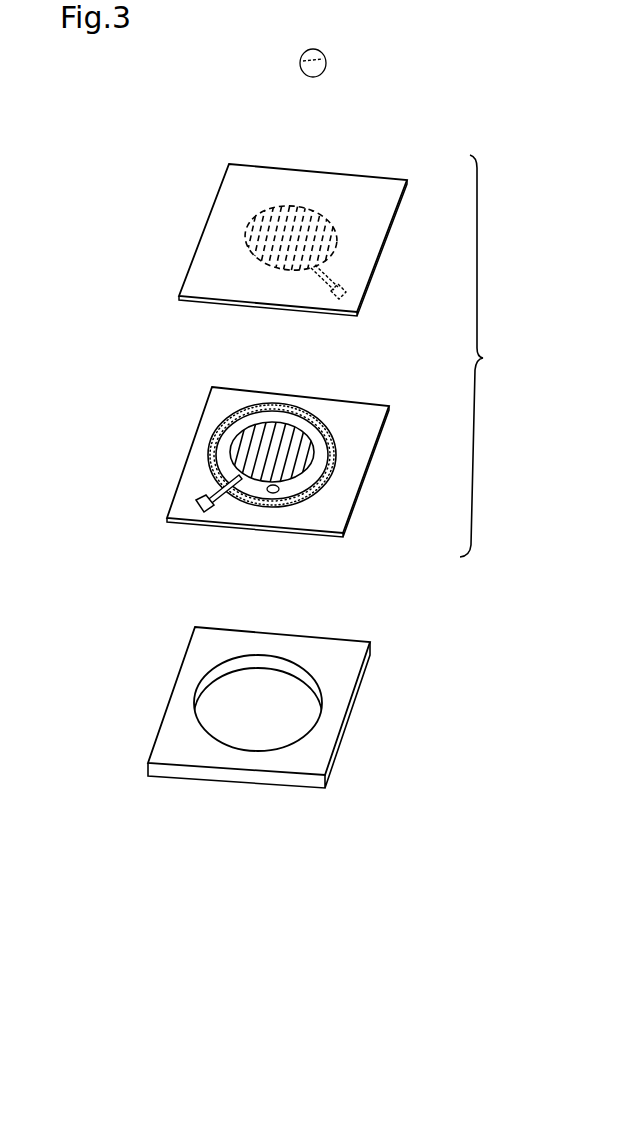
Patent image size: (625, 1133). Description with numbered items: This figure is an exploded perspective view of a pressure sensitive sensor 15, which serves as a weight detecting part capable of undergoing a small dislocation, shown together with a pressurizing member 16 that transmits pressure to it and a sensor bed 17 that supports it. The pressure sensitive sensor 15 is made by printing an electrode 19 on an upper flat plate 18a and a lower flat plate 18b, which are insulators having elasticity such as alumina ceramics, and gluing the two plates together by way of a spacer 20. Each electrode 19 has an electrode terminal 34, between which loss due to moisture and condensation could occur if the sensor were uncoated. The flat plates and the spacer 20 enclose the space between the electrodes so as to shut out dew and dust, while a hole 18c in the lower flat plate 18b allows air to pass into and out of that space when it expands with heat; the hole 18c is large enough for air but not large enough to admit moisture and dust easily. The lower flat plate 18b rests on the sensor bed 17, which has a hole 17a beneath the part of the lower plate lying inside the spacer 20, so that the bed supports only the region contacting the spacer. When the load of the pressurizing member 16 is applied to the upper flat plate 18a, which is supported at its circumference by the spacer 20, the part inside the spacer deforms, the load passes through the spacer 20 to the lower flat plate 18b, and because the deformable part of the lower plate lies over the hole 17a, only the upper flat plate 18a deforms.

The pressure sensitive sensor 15 is at (488, 356).
The pressurizing member 16 is at (318, 69).
The sensor bed 17 is at (348, 662).
The hole 17a is at (305, 715).
The upper flat plate 18a is at (383, 211).
The lower flat plate 18b is at (370, 408).
The hole 18c is at (307, 502).
The electrode 19 is at (328, 244).
The spacer 20 is at (280, 488).
The electrode terminal 34 is at (347, 292).